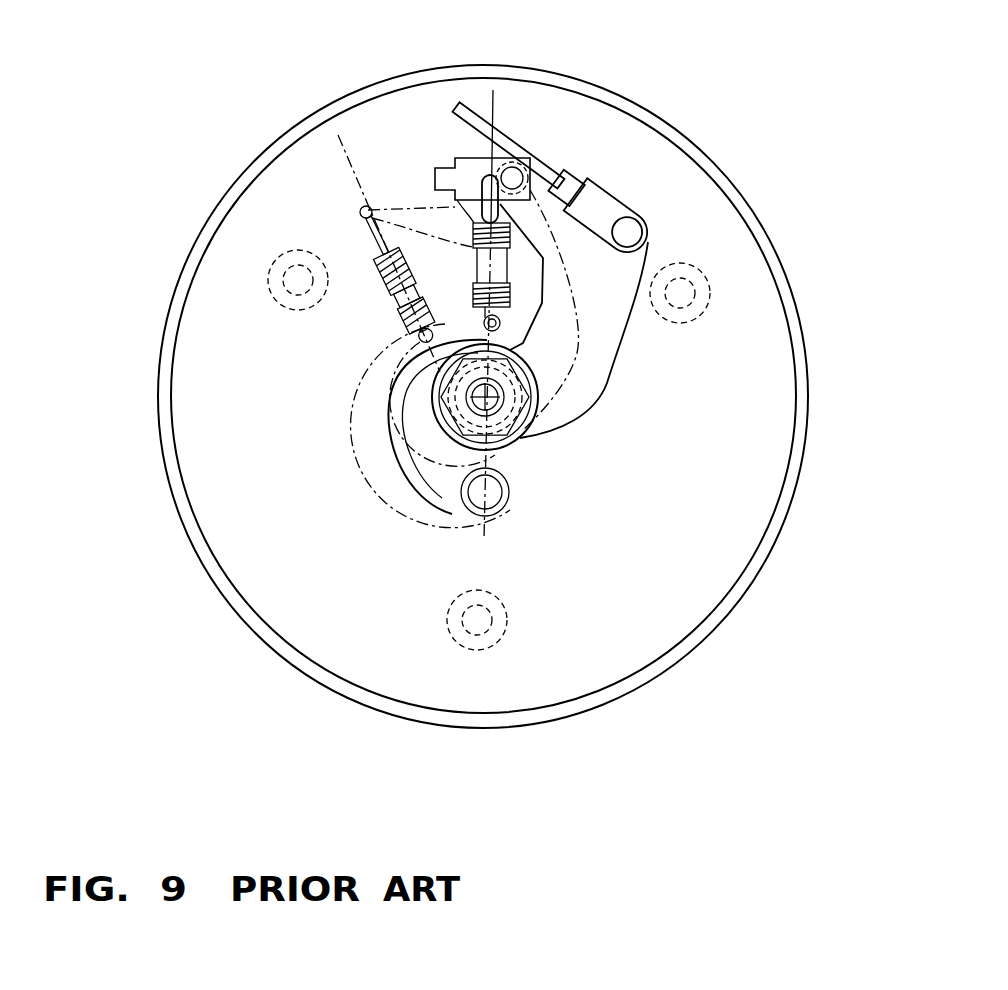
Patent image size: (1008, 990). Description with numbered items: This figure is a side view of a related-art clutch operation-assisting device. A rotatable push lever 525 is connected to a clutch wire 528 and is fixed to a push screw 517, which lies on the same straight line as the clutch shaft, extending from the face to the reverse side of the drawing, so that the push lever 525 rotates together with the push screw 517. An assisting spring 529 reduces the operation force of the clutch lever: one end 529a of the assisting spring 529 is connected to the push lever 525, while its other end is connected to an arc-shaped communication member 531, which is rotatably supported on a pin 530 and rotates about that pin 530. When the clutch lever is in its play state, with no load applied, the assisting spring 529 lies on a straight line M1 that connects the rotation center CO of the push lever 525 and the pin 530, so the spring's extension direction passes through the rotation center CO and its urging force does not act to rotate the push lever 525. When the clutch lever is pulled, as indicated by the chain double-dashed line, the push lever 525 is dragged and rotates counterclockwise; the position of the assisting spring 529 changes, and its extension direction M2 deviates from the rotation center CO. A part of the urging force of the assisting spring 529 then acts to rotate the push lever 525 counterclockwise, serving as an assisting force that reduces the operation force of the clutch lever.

The push screw 517 is at (523, 420).
The push lever 525 is at (607, 383).
The clutch wire 528 is at (556, 152).
The assisting spring 529 is at (436, 188).
The one end of assisting spring 529a is at (490, 155).
The pin 530 is at (478, 492).
The communication member 531 is at (390, 433).
The straight line M1 is at (500, 103).
The extension direction M2 is at (353, 173).
The rotation center CO is at (485, 397).